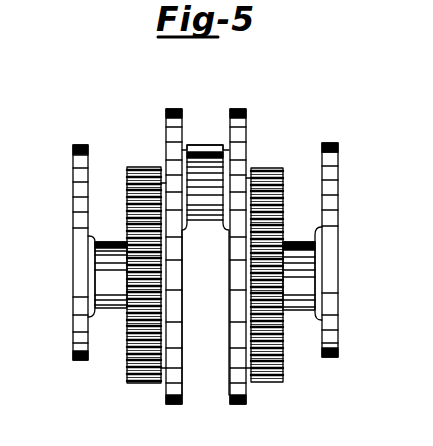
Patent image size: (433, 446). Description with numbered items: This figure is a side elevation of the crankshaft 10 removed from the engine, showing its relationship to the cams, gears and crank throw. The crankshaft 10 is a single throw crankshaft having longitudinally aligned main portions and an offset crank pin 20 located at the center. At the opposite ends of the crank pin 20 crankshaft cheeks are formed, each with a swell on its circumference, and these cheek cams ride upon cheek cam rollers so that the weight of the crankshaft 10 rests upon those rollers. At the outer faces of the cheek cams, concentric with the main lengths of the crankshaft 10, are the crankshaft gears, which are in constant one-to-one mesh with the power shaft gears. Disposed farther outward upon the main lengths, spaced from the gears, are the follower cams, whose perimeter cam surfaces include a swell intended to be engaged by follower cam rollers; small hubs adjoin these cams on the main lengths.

The crankshaft 10 is at (183, 147).
The crank pin 20 is at (198, 147).